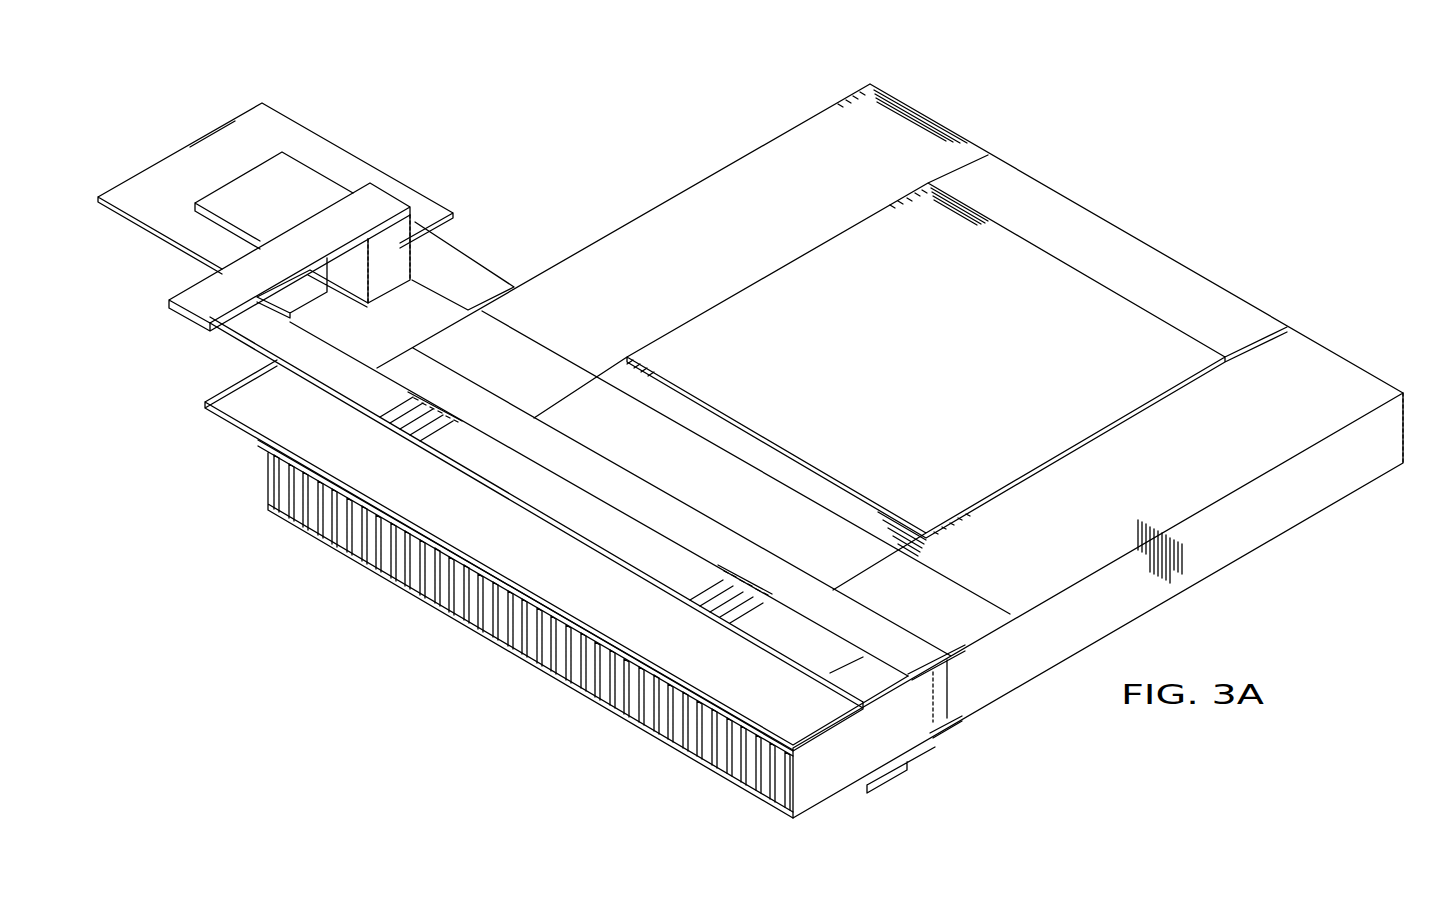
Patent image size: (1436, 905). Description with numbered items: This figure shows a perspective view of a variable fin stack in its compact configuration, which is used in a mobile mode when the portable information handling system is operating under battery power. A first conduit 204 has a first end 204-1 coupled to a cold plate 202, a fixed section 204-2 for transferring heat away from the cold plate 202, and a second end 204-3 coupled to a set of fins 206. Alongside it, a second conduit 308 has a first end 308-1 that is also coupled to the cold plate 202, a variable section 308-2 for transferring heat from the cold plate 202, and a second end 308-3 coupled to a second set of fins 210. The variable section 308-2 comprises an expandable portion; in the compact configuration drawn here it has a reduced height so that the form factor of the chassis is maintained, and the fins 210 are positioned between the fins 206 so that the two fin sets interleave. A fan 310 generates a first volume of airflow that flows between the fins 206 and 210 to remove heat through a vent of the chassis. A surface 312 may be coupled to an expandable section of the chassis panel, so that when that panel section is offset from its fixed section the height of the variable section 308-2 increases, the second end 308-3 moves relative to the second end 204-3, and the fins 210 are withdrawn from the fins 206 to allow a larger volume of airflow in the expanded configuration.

The cold plate 202 is at (222, 136).
The first conduit 204 is at (215, 428).
The first end 204-1 is at (310, 180).
The fixed section 204-2 is at (435, 303).
The second end 204-3 is at (905, 797).
The fins 206 is at (278, 515).
The fins 210 is at (265, 490).
The second conduit 308 is at (178, 318).
The first end 308-1 is at (217, 197).
The variable section 308-2 is at (407, 223).
The second end 308-3 is at (880, 685).
The fan 310 is at (1137, 247).
The surface 312 is at (778, 277).